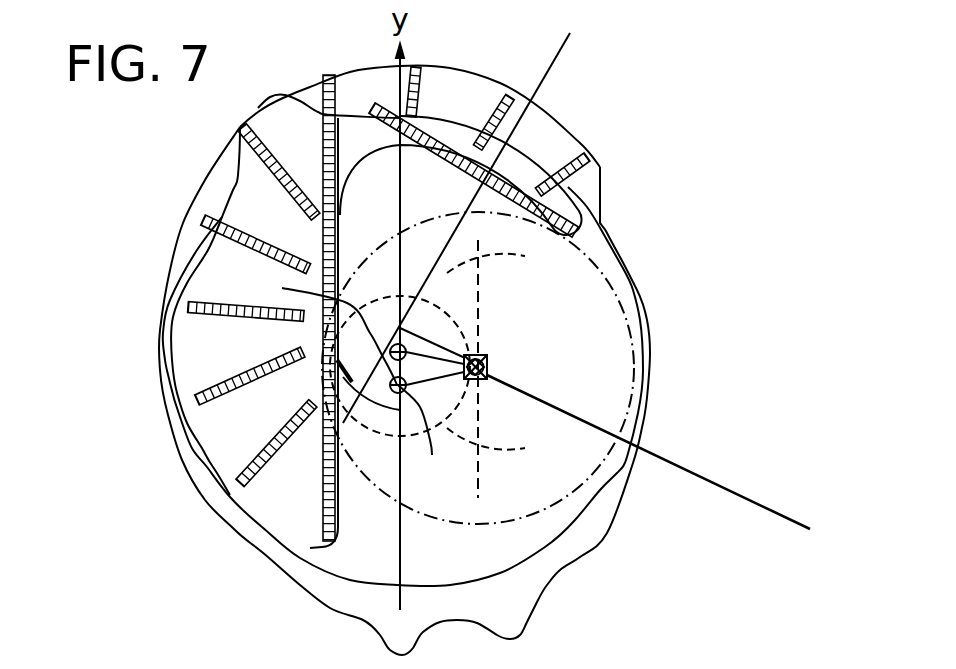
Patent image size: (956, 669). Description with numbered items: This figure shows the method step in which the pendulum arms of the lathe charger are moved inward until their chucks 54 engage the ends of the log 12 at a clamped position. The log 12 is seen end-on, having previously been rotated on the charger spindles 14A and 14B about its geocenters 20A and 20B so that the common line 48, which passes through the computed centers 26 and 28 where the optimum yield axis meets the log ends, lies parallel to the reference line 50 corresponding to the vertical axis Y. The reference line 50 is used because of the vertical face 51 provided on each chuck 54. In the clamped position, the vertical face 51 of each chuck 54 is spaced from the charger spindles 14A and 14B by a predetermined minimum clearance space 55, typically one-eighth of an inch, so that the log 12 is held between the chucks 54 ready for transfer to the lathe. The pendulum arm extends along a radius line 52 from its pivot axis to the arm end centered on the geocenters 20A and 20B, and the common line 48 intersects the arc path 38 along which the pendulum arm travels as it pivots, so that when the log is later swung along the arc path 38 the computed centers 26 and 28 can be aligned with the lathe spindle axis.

The log 12 is at (577, 557).
The charger spindle 14A is at (486, 445).
The charger spindle 14B is at (492, 262).
The geocenter 20A is at (406, 433).
The geocenter 20B is at (292, 326).
The computed center 26 is at (488, 358).
The computed center 28 is at (475, 367).
The arc path 38 is at (688, 470).
The common line 48 is at (478, 308).
The reference line 50 is at (400, 185).
The vertical face 51 is at (340, 492).
The radius line 52 is at (545, 70).
The chuck 54 is at (460, 67).
The minimum clearance space 55 is at (350, 416).